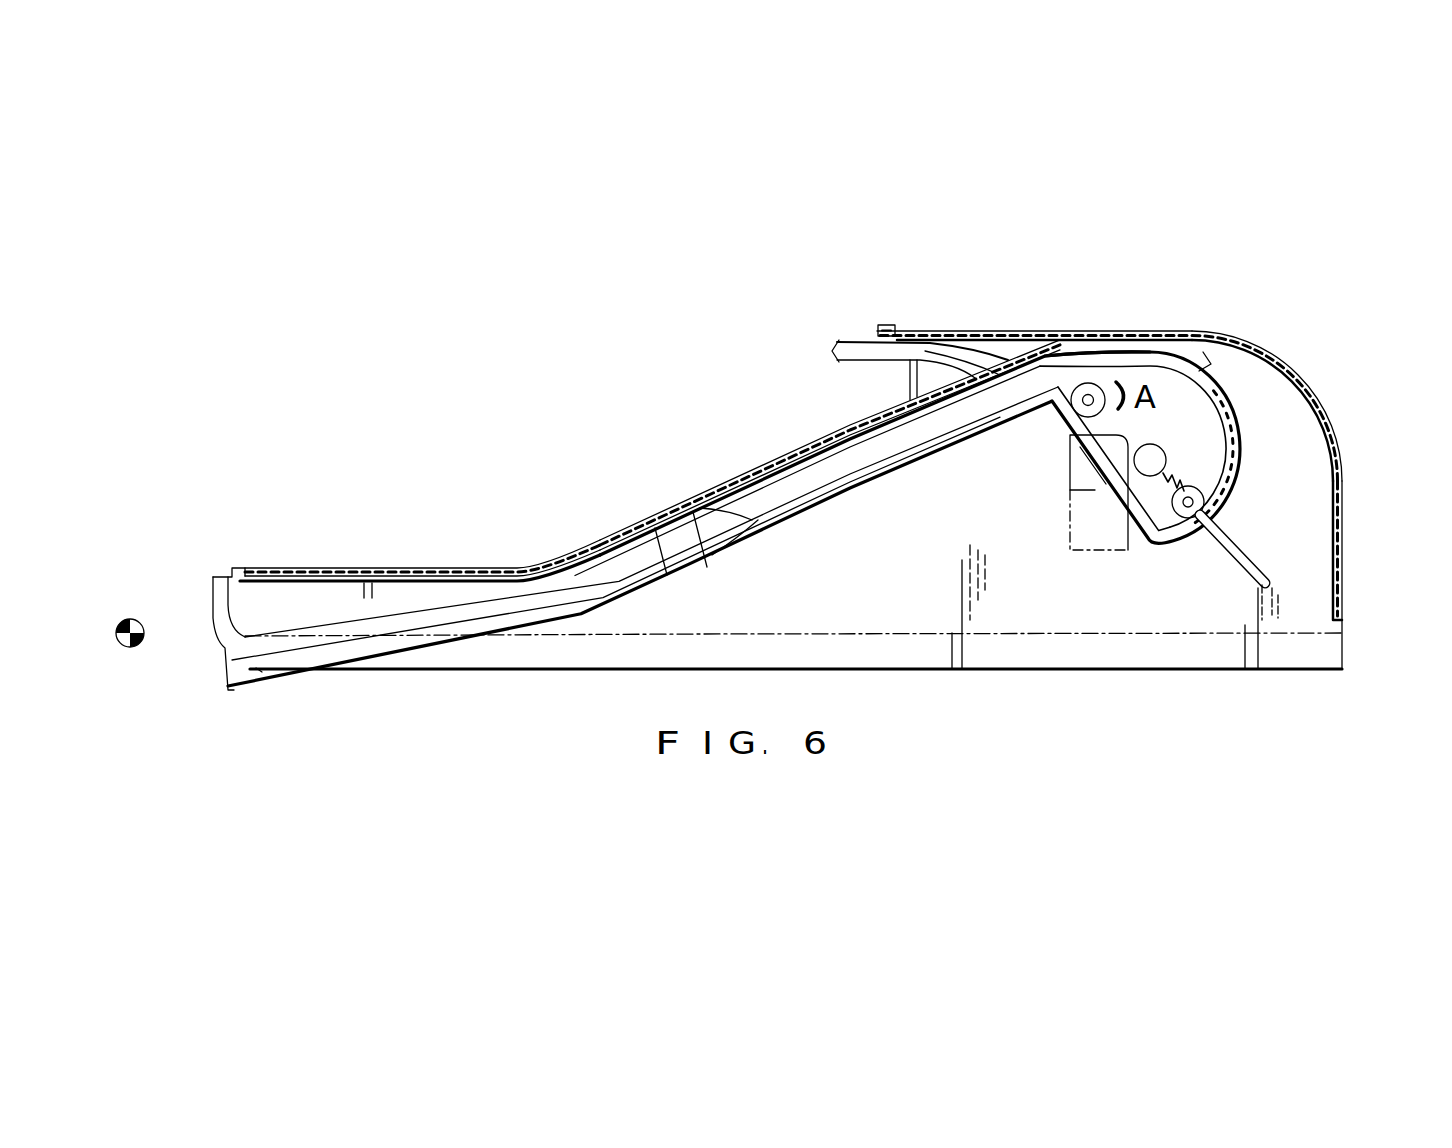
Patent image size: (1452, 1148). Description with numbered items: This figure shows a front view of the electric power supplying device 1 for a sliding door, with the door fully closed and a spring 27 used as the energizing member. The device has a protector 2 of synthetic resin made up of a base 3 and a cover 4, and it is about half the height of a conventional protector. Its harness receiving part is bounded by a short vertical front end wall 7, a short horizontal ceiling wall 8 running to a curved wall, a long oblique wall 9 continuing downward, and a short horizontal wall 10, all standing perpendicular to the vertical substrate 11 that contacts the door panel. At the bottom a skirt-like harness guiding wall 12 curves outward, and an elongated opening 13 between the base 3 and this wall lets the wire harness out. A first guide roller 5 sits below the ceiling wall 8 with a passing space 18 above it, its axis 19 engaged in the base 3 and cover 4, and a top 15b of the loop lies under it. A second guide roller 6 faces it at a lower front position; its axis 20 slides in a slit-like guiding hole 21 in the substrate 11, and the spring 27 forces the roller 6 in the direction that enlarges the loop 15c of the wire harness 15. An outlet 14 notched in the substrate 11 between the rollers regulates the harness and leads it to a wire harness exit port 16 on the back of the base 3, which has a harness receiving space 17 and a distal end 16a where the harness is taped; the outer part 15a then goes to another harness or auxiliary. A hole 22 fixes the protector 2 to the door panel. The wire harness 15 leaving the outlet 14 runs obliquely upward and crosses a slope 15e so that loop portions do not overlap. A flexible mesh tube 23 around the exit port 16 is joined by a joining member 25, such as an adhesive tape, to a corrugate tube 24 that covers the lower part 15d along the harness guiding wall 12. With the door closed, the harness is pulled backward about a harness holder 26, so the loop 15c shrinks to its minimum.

The electric power supplying device 1 is at (1091, 156).
The protector 2 is at (1288, 224).
The base 3 is at (1233, 340).
The cover 4 is at (1277, 353).
The first guide roller 5 is at (1082, 386).
The second guide roller 6 is at (1239, 513).
The front end wall 7 is at (1346, 496).
The ceiling wall 8 is at (1160, 330).
The oblique wall 9 is at (760, 467).
The horizontal wall 10 is at (322, 566).
The substrate 11 is at (1170, 641).
The harness guiding wall 12 is at (1090, 670).
The opening 13 is at (993, 670).
The outlet 14 is at (1073, 470).
The wire harness 15 is at (867, 479).
The outer part 15a is at (852, 341).
The top of the loop 15b is at (1178, 370).
The loop 15c is at (1241, 478).
The lower part 15d is at (283, 680).
The slope 15e is at (925, 444).
The wire harness exit port 16 is at (962, 331).
The distal end 16a is at (905, 325).
The harness receiving space 17 is at (990, 348).
The passing space 18 is at (1108, 345).
The axis 19 is at (1073, 412).
The axis 20 is at (1188, 519).
The guiding hole 21 is at (1246, 552).
The hole 22 is at (1162, 452).
The flexible mesh tube 23 is at (808, 495).
The corrugate tube 24 is at (626, 594).
The coupling 25 is at (708, 553).
The harness holder 26 is at (133, 619).
The spring 27 is at (1195, 470).